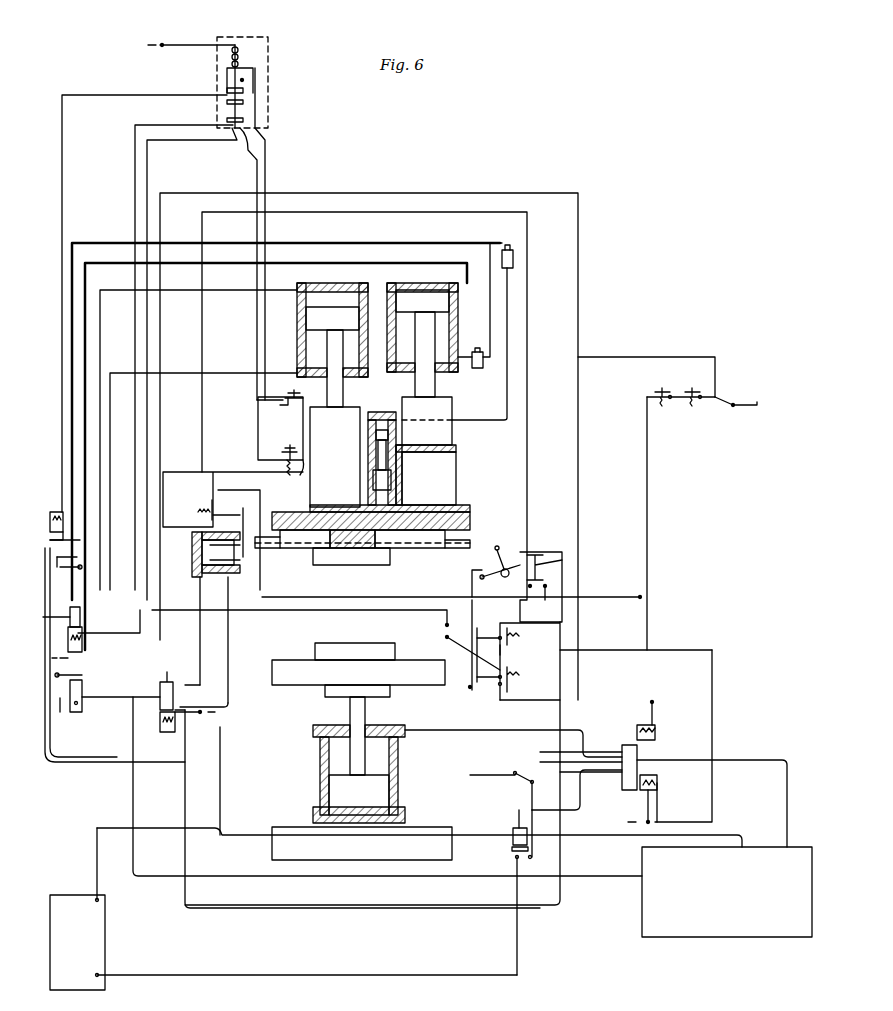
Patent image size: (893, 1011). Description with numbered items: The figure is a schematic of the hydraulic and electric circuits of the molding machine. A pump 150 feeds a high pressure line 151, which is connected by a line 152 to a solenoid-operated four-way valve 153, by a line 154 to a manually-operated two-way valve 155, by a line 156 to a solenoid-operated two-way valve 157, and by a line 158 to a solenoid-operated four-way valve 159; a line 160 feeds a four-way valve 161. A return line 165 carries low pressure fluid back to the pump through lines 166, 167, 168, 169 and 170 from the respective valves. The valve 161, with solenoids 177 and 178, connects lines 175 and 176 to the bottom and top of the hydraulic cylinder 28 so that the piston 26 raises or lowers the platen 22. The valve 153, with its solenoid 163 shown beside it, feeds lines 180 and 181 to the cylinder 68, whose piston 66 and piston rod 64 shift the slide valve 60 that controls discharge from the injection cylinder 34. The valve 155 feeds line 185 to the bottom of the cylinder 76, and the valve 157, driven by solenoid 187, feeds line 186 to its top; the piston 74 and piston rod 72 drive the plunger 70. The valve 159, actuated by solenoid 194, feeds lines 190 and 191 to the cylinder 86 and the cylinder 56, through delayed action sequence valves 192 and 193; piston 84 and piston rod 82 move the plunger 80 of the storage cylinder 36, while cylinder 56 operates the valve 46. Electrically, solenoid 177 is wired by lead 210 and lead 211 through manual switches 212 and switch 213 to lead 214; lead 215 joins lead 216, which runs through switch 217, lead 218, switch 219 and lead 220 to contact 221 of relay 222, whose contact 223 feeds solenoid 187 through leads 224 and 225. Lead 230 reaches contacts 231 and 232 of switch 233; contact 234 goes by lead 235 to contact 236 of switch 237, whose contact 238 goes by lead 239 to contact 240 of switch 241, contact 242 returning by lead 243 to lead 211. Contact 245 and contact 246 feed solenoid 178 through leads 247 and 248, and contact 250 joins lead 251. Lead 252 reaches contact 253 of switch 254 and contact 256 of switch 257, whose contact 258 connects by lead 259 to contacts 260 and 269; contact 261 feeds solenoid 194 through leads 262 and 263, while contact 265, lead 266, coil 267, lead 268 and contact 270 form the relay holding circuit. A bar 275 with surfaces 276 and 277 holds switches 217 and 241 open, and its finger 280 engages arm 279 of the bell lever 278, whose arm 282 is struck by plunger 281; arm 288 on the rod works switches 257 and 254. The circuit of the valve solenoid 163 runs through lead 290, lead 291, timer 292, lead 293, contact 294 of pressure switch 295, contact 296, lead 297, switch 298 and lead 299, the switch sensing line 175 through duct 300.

The platen 22 is at (292, 678).
The reciprocable piston 26 is at (325, 780).
The hydraulic cylinder 28 is at (392, 762).
The injection cylinder 34 is at (335, 495).
The storage cylinder 36 is at (429, 478).
The valve 46 is at (402, 465).
The hydraulic cylinder 56 is at (382, 451).
The slide valve 60 is at (352, 565).
The piston rod 64 is at (272, 548).
The reciprocable piston 66 is at (202, 550).
The hydraulic cylinder 68 is at (214, 636).
The plunger 70 is at (337, 462).
The piston rod 72 is at (343, 385).
The reciprocable piston 74 is at (345, 318).
The hydraulic cylinder 76 is at (297, 338).
The plunger 80 is at (452, 435).
The piston rod 82 is at (435, 385).
The reciprocable piston 84 is at (440, 300).
The hydraulic cylinder 86 is at (452, 326).
The pump 150 is at (725, 937).
The high pressure line 151 is at (133, 650).
The line 152 is at (158, 700).
The solenoid-operated four-way valve 153 is at (171, 691).
The line 154 is at (110, 700).
The manually-operated two-way valve 155 is at (76, 705).
The line 156 is at (90, 653).
The solenoid-operated two-way valve 157 is at (88, 608).
The line 158 is at (85, 568).
The solenoid-operated four-way valve 159 is at (50, 512).
The line 160 is at (765, 760).
The solenoid-operated four-way valve 161 is at (637, 755).
The solenoid 163 is at (168, 732).
The return line 165 is at (85, 763).
The line 166 is at (557, 749).
The line 167 is at (185, 748).
The line 168 is at (60, 712).
The line 169 is at (50, 617).
The line 170 is at (45, 560).
The line 175 is at (590, 810).
The line 176 is at (550, 724).
The solenoid 177 is at (657, 785).
The solenoid 178 is at (655, 732).
The line 180 is at (200, 630).
The line 181 is at (228, 632).
The line 185 is at (232, 373).
The line 186 is at (233, 290).
The solenoid 187 is at (100, 635).
The line 190 is at (345, 243).
The line 191 is at (432, 263).
The delayed action sequence valve 192 is at (478, 370).
The delayed action sequence valve 193 is at (513, 259).
The solenoid 194 is at (72, 490).
The lead 210 is at (634, 810).
The lead 211 is at (648, 510).
The manual switches 212 is at (693, 388).
The switch 213 is at (735, 403).
The lead 214 is at (745, 406).
The lead 215 is at (628, 357).
The lead 216 is at (580, 476).
The switch 217 is at (512, 685).
The lead 218 is at (455, 645).
The switch 219 is at (445, 633).
The lead 220 is at (352, 610).
The contact 221 is at (243, 135).
The relay 222 is at (269, 80).
The contact 223 is at (232, 130).
The lead 224 is at (192, 120).
The lead 225 is at (58, 659).
The lead 230 is at (360, 193).
The contact 231 is at (187, 515).
The contact 232 is at (236, 532).
The switch 233 is at (213, 500).
The contact 234 is at (208, 508).
The lead 235 is at (415, 207).
The contact 236 is at (537, 552).
The switch 237 is at (545, 565).
The contact 238 is at (545, 558).
The lead 239 is at (563, 612).
The contact 240 is at (505, 632).
The switch 241 is at (520, 640).
The contact 242 is at (500, 650).
The lead 243 is at (600, 650).
The contact 245 is at (530, 588).
The contact 246 is at (545, 590).
The lead 247 is at (622, 597).
The lead 248 is at (652, 710).
The contact 250 is at (218, 502).
The lead 251 is at (262, 596).
The lead 252 is at (212, 472).
The contact 253 is at (300, 476).
The switch 254 is at (290, 435).
The contact 256 is at (328, 407).
The switch 257 is at (283, 401).
The contact 258 is at (285, 393).
The lead 259 is at (300, 318).
The contact 260 is at (243, 102).
The contact 261 is at (227, 90).
The lead 262 is at (62, 166).
The lead 263 is at (50, 525).
The contact 265 is at (290, 470).
The lead 266 is at (257, 335).
The coil 267 is at (238, 55).
The lead 268 is at (190, 40).
The contact 269 is at (245, 78).
The contact 270 is at (227, 74).
The bar 275 is at (470, 690).
The surface 276 is at (482, 688).
The surface 277 is at (484, 645).
The bell lever 278 is at (505, 555).
The arm 279 is at (484, 563).
The finger 280 is at (472, 576).
The plunger 281 is at (448, 548).
The arm 282 is at (497, 546).
The arm 288 is at (294, 405).
The lead 290 is at (205, 716).
The lead 291 is at (220, 778).
The timer 292 is at (78, 990).
The lead 293 is at (305, 975).
The contact 294 is at (515, 857).
The pressure-actuated switch 295 is at (512, 849).
The contact 296 is at (518, 880).
The lead 297 is at (530, 790).
The switch 298 is at (508, 773).
The lead 299 is at (474, 777).
The duct 300 is at (519, 825).